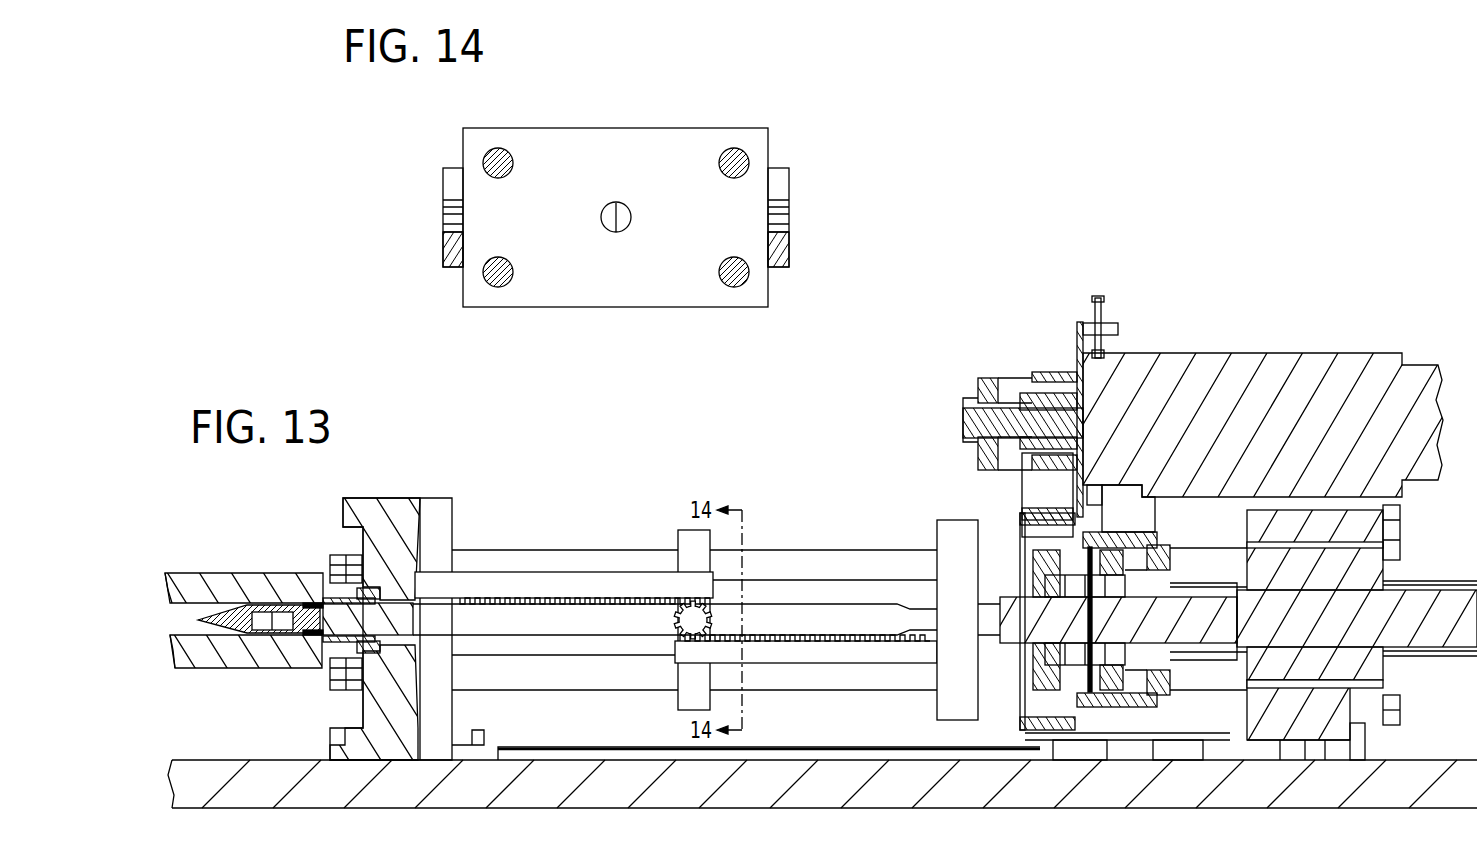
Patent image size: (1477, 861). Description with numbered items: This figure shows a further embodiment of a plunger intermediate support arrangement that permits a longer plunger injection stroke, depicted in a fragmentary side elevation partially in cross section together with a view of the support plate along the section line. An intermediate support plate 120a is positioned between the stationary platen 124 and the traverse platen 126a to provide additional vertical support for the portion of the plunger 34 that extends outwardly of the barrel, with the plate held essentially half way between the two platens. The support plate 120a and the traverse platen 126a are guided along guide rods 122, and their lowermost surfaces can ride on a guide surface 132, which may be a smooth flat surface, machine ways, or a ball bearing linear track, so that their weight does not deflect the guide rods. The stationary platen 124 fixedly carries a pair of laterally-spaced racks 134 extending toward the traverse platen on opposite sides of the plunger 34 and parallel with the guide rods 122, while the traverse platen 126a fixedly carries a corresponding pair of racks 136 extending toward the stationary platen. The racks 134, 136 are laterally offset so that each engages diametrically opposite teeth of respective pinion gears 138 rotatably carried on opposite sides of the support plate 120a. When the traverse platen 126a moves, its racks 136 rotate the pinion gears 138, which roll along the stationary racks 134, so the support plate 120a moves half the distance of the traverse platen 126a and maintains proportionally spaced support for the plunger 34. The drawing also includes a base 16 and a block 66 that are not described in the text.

In FIG. 13, the base 16 is at (835, 795).
In FIG. 14, the plunger 34 is at (618, 227).
In FIG. 13, the plunger 34 is at (820, 615).
In FIG. 13, the motor mount block 66 is at (1327, 718).
In FIG. 14, the intermediate support plate 120a is at (603, 140).
In FIG. 13, the intermediate support plate 120a is at (687, 542).
In FIG. 14, the guide rods 122 is at (495, 156).
In FIG. 13, the guide rods 122 is at (582, 677).
In FIG. 13, the stationary platen 124 is at (393, 505).
In FIG. 13, the traverse platen 126a is at (958, 527).
In FIG. 13, the guide surface 132 is at (565, 752).
In FIG. 14, the stationary platen racks 134 is at (450, 180).
In FIG. 13, the stationary platen racks 134 is at (470, 585).
In FIG. 14, the traverse platen racks 136 is at (450, 257).
In FIG. 13, the traverse platen racks 136 is at (820, 650).
In FIG. 14, the pinion gears 138 is at (447, 213).
In FIG. 13, the pinion gears 138 is at (697, 622).